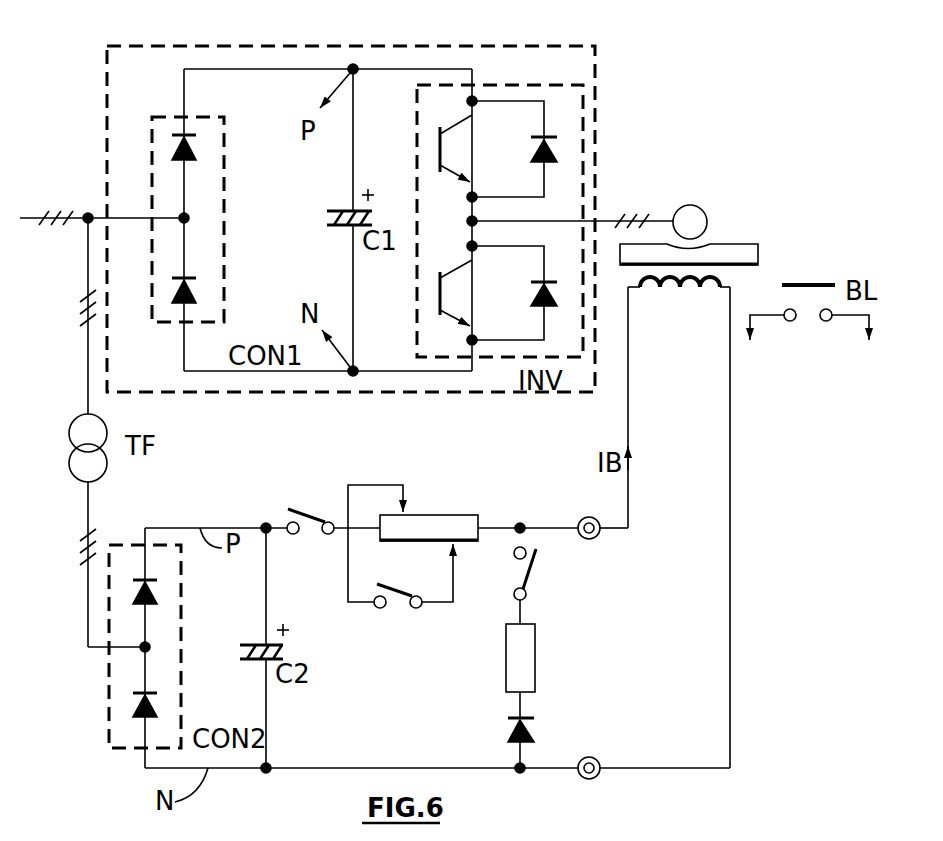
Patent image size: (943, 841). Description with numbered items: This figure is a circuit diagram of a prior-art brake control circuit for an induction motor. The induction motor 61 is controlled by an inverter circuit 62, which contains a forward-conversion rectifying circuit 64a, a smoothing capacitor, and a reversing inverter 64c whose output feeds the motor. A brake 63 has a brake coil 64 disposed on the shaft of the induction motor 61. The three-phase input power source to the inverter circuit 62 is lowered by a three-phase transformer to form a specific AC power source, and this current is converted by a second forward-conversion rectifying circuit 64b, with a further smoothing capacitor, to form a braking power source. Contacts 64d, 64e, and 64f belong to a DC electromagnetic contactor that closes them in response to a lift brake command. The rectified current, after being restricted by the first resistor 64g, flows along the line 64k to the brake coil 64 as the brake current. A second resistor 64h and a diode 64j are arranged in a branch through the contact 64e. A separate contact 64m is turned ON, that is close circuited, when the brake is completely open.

The inverter circuit 62 is at (237, 44).
The rectifying circuit 64a is at (224, 227).
The inverter 64c is at (566, 85).
The induction motor 61 is at (697, 205).
The brake 63 is at (737, 244).
The brake coil 64 is at (733, 283).
The contact 64m is at (805, 338).
The rectifying circuit 64b is at (182, 645).
The contact 64d is at (316, 542).
The resistor 64g is at (450, 514).
The contact 64f is at (388, 614).
The line 64k is at (630, 504).
The contact 64e is at (575, 594).
The resistor 64h is at (506, 676).
The diode 64j is at (508, 735).